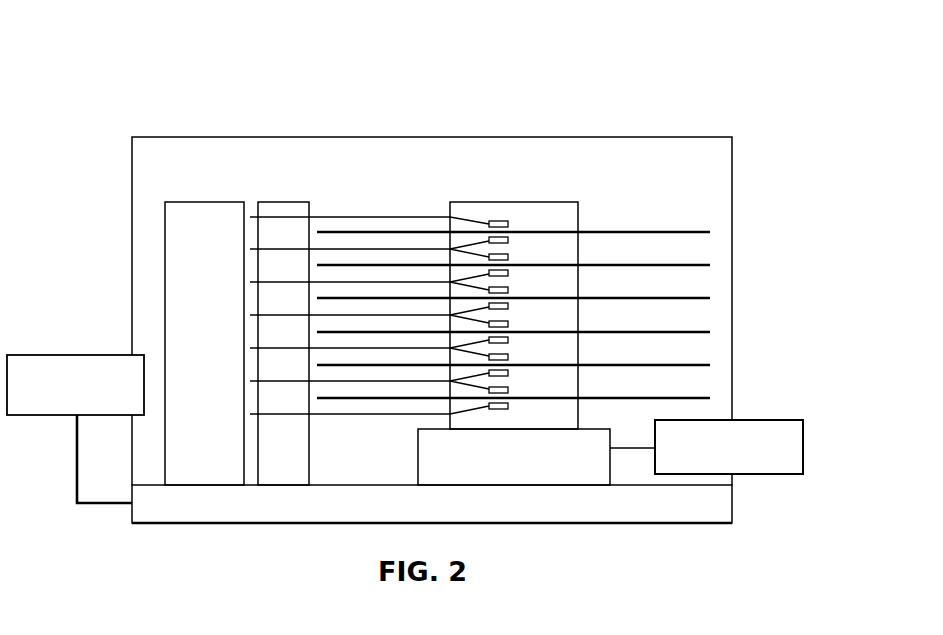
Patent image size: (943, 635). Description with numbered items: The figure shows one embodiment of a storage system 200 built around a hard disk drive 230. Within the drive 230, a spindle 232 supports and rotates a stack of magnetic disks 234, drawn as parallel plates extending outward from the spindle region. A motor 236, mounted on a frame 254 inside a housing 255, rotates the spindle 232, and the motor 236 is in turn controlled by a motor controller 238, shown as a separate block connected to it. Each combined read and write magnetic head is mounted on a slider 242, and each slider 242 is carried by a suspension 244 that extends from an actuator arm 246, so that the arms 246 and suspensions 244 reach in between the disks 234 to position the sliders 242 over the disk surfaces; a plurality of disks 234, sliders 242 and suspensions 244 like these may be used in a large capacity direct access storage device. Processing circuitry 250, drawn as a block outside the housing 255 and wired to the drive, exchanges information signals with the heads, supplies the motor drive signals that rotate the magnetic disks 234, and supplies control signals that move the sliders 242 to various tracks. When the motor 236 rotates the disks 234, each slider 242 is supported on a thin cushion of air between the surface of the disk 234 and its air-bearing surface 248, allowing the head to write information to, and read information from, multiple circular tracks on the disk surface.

The storage system 200 is at (104, 86).
The hard disk drive 230 is at (636, 196).
The spindle 232 is at (565, 202).
The magnetic disks 234 is at (700, 233).
The motor 236 is at (526, 467).
The motor controller 238 is at (765, 475).
The slider 242 is at (512, 243).
The suspension 244 is at (483, 248).
The actuator arm 246 is at (420, 248).
The air-bearing surface 248 is at (497, 359).
The processing circuitry 250 is at (47, 355).
The frame 254 is at (182, 523).
The housing 255 is at (673, 137).